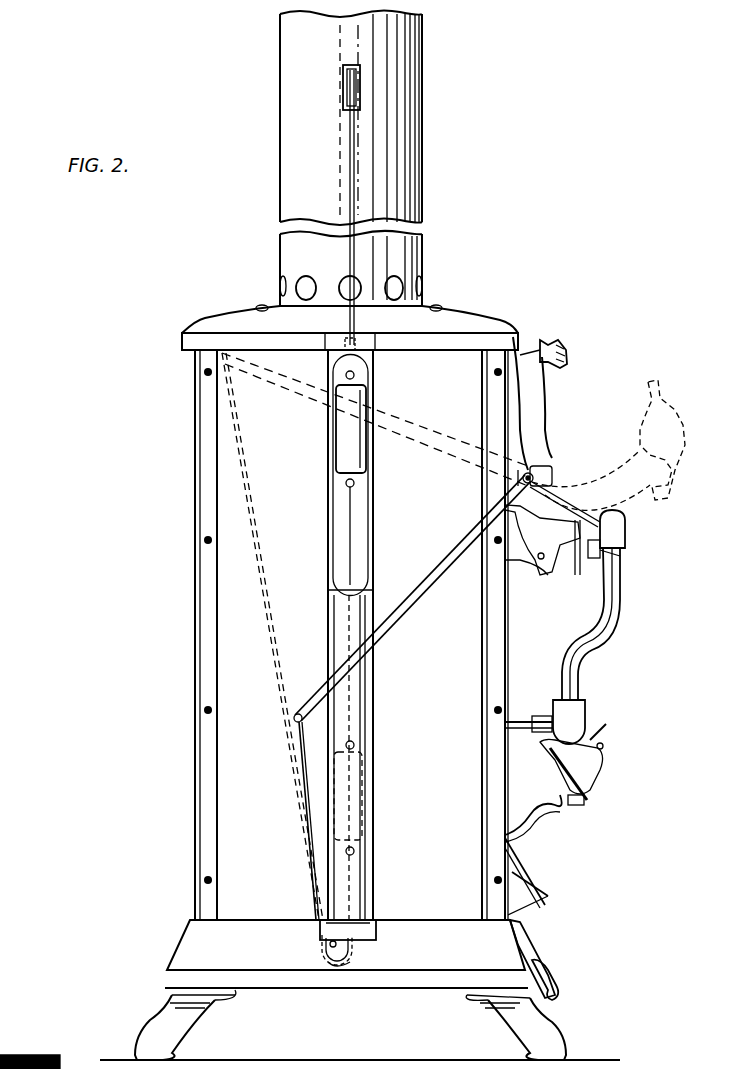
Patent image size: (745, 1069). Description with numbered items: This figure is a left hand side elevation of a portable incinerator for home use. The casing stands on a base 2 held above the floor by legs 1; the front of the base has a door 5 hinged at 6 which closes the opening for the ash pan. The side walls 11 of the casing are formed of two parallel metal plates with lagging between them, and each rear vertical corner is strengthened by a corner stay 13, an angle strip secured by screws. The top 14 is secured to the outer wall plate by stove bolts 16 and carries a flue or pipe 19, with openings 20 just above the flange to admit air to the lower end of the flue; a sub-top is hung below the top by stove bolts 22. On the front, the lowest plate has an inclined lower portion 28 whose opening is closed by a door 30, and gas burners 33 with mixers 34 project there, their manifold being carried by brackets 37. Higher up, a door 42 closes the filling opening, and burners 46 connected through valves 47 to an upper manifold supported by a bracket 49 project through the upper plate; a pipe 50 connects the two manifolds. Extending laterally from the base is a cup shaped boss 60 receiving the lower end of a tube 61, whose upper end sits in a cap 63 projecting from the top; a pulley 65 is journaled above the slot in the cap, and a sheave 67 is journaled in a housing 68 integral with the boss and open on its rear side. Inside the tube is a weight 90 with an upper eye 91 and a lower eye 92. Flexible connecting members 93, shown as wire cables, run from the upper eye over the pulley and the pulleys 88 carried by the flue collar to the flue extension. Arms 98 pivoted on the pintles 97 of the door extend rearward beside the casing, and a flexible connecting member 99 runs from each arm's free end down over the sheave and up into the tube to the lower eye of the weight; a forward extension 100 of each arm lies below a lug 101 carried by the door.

The legs 1 is at (185, 1010).
The base 2 is at (347, 959).
The door 5 is at (538, 945).
The hinge 6 is at (556, 985).
The side walls 11 is at (230, 780).
The corner stay 13 is at (205, 492).
The top 14 is at (238, 320).
The stove bolts 16 is at (196, 336).
The flue or pipe 19 is at (420, 250).
The openings 20 is at (308, 282).
The stove bolts 22 is at (262, 303).
The inclined lower portion of plate 28 is at (530, 887).
The door 30 is at (518, 858).
The gas burners 33 is at (528, 816).
The mixers 34 is at (590, 770).
The brackets 37 is at (520, 720).
The door 42 is at (532, 416).
The burner 46 is at (550, 565).
The valves 47 is at (600, 568).
The bracket 49 is at (575, 505).
The pipe 50 is at (596, 638).
The cup shaped boss 60 is at (372, 927).
The tube 61 is at (355, 700).
The cap 63 is at (374, 345).
The pulley 65 is at (356, 340).
The sheave 67 is at (322, 950).
The housing 68 is at (345, 962).
The pulleys 88 is at (343, 78).
The weight 90 is at (340, 462).
The upper eye 91 is at (355, 376).
The lower eye 92 is at (355, 483).
The flexible connecting members 93 is at (350, 160).
The gudgeons or pintles 97 is at (523, 478).
The arms 98 is at (412, 597).
The flexible connecting member 99 is at (352, 522).
The extension 100 is at (533, 476).
The lug 101 is at (540, 460).